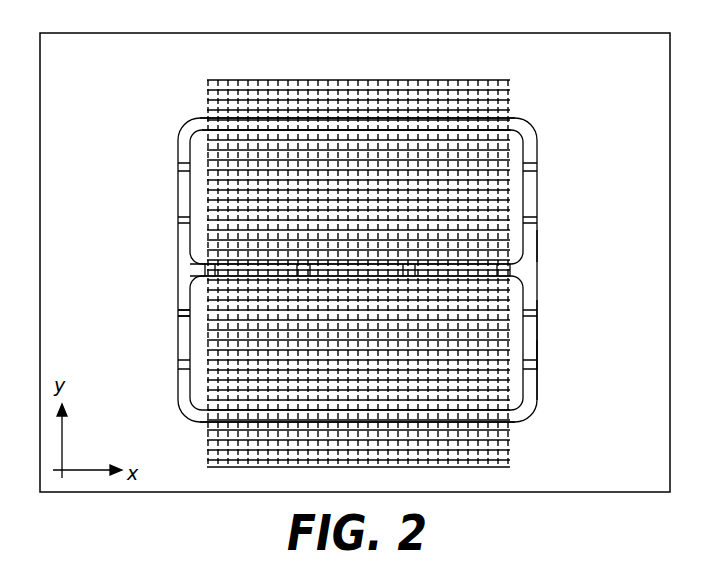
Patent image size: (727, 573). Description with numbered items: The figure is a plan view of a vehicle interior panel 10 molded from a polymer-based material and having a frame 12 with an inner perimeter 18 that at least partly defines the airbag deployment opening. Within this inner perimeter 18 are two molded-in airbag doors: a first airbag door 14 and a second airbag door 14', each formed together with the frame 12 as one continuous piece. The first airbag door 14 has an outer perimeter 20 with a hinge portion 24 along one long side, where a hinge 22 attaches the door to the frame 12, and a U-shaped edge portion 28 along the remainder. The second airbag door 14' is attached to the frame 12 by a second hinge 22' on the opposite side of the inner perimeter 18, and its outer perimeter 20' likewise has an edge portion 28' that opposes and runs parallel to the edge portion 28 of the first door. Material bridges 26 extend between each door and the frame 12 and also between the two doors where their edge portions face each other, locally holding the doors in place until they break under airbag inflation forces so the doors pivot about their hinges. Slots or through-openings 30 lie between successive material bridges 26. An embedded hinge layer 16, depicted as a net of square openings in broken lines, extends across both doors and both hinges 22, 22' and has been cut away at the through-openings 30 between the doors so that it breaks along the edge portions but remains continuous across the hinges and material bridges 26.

The panel 10 is at (115, 147).
The frame 12 is at (118, 350).
The airbag door 14 is at (335, 169).
The second airbag door 14' is at (327, 355).
The hinge layer 16 is at (497, 100).
The inner perimeter 18 is at (538, 402).
The outer perimeter 20 is at (569, 232).
The outer perimeter 20' is at (572, 341).
The hinge 22 is at (357, 87).
The second hinge 22' is at (375, 443).
The hinge portion 24 is at (305, 128).
The material bridges 26 is at (185, 312).
The edge portion 28 is at (378, 184).
The edge portion 28' is at (382, 316).
The through-openings 30 is at (357, 277).